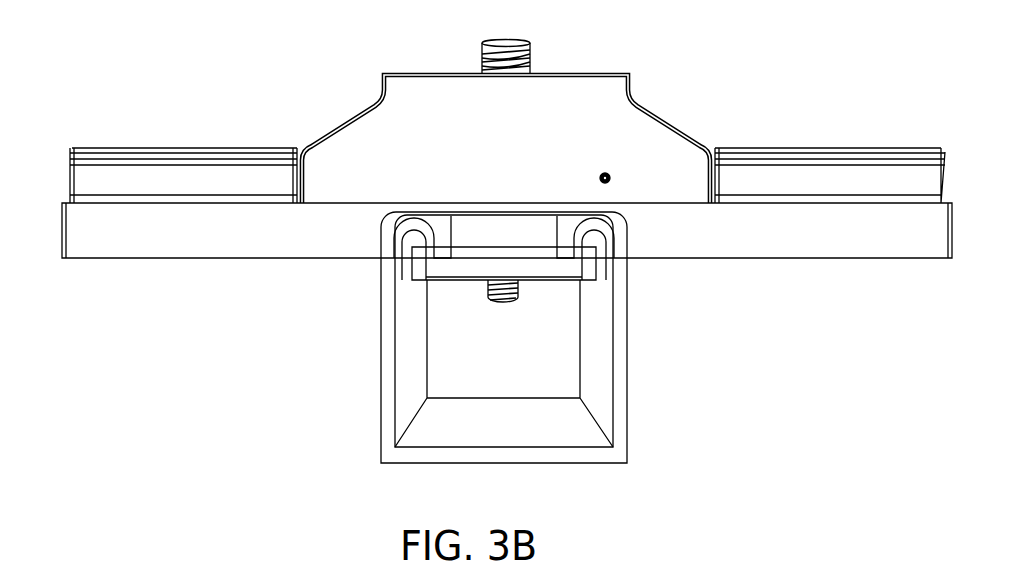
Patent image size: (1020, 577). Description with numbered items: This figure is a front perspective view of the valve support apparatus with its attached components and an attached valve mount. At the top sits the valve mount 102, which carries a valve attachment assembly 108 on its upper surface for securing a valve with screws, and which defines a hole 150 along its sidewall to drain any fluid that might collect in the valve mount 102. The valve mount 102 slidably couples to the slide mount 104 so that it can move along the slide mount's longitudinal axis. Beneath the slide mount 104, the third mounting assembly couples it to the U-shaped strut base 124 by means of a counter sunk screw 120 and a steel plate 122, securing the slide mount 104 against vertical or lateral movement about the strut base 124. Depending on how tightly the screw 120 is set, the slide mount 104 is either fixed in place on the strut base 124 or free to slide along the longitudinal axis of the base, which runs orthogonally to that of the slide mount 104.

The valve mount 102 is at (340, 124).
The slide mount 104 is at (73, 195).
The valve attachment assembly 108 is at (531, 57).
The hole 150 is at (605, 173).
The counter sunk screw 120 is at (486, 292).
The steel plate 122 is at (552, 281).
The U-shaped strut base 124 is at (381, 400).